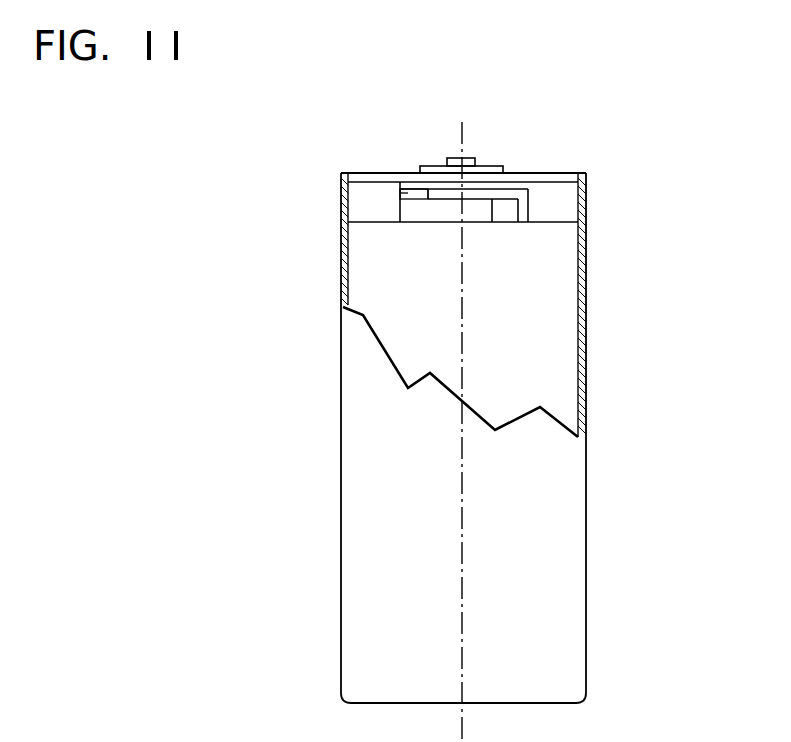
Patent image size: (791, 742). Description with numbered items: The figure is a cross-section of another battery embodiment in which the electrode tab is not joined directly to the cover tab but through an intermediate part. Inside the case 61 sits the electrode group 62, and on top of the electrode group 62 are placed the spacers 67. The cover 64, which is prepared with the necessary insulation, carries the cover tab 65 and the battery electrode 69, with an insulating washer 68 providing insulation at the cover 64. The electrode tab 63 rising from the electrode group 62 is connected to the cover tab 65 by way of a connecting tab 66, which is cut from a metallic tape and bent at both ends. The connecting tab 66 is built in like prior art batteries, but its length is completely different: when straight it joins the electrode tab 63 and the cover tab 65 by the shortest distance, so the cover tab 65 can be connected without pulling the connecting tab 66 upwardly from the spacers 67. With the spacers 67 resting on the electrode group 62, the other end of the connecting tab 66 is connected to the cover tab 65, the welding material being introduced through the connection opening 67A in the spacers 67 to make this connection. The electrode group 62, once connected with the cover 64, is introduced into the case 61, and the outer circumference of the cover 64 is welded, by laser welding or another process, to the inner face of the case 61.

The case 61 is at (587, 353).
The electrode group 62 is at (541, 354).
The electrode tab 63 is at (507, 214).
The cover 64 is at (557, 178).
The cover tab 65 is at (403, 190).
The connecting tab 66 is at (433, 200).
The spacers 67 is at (563, 210).
The connection opening 67A is at (450, 213).
The insulating washer 68 is at (409, 188).
The battery electrode 69 is at (468, 160).